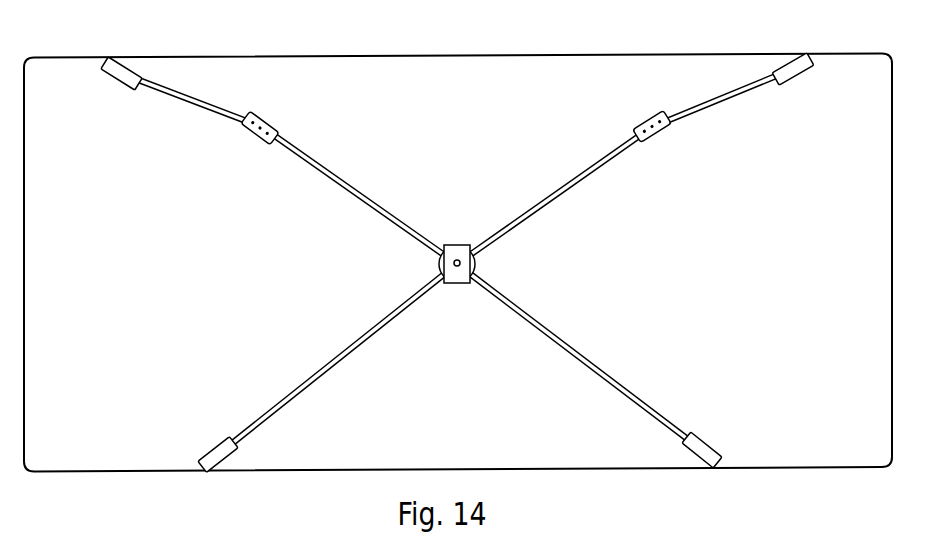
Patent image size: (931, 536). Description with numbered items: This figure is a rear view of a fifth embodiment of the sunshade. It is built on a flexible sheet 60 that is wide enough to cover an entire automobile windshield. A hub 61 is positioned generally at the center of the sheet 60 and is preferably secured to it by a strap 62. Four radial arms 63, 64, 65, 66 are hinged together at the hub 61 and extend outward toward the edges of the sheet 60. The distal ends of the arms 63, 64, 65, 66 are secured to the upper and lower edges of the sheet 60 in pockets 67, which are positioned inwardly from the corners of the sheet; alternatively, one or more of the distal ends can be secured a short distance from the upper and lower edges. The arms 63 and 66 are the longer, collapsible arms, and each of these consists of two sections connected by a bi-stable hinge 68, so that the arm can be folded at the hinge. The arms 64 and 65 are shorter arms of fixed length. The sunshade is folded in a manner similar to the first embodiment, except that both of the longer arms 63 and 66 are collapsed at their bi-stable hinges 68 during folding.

The flexible sheet 60 is at (592, 57).
The hub 61 is at (478, 263).
The strap 62 is at (459, 285).
The radial arm 63 is at (340, 190).
The radial arm 64 is at (318, 367).
The radial arm 65 is at (604, 371).
The radial arm 66 is at (572, 190).
The pocket 67 is at (121, 89).
The bi-stable hinge 68 is at (256, 140).